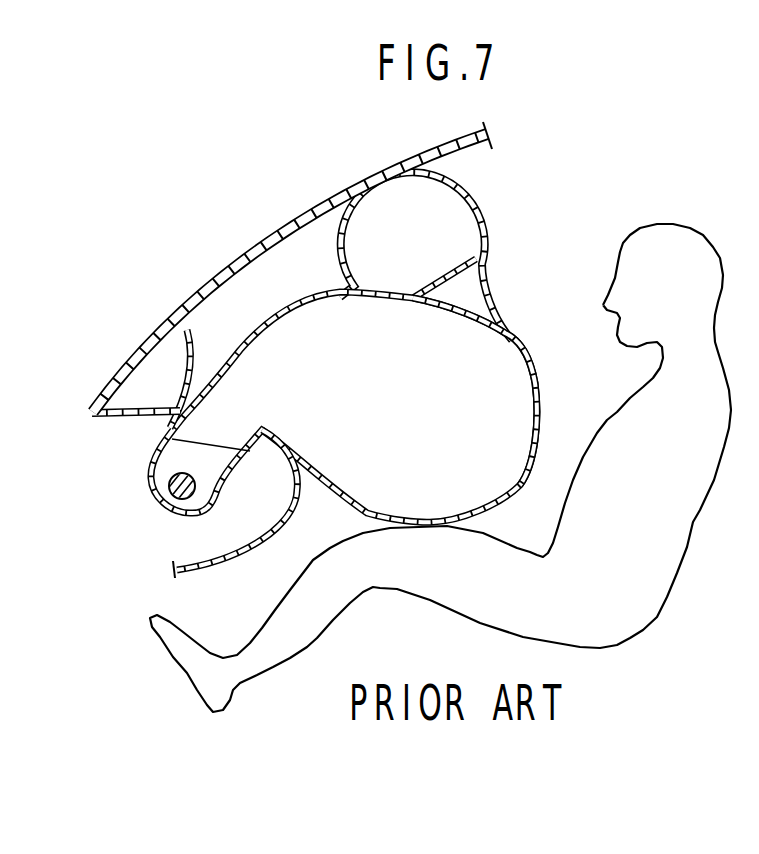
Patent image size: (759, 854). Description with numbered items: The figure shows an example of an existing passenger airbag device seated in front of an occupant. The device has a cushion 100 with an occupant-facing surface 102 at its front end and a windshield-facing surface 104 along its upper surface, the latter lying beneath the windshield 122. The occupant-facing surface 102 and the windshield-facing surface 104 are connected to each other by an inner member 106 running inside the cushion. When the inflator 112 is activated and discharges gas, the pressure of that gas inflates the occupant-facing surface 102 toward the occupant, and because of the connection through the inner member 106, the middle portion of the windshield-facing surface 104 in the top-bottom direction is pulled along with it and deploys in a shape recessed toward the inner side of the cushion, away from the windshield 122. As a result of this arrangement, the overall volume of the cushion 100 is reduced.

The cushion 100 is at (455, 178).
The occupant-facing surface 102 is at (512, 318).
The windshield-facing surface 104 is at (300, 291).
The inner member 106 is at (407, 302).
The inflator 112 is at (157, 487).
The windshield 122 is at (282, 161).